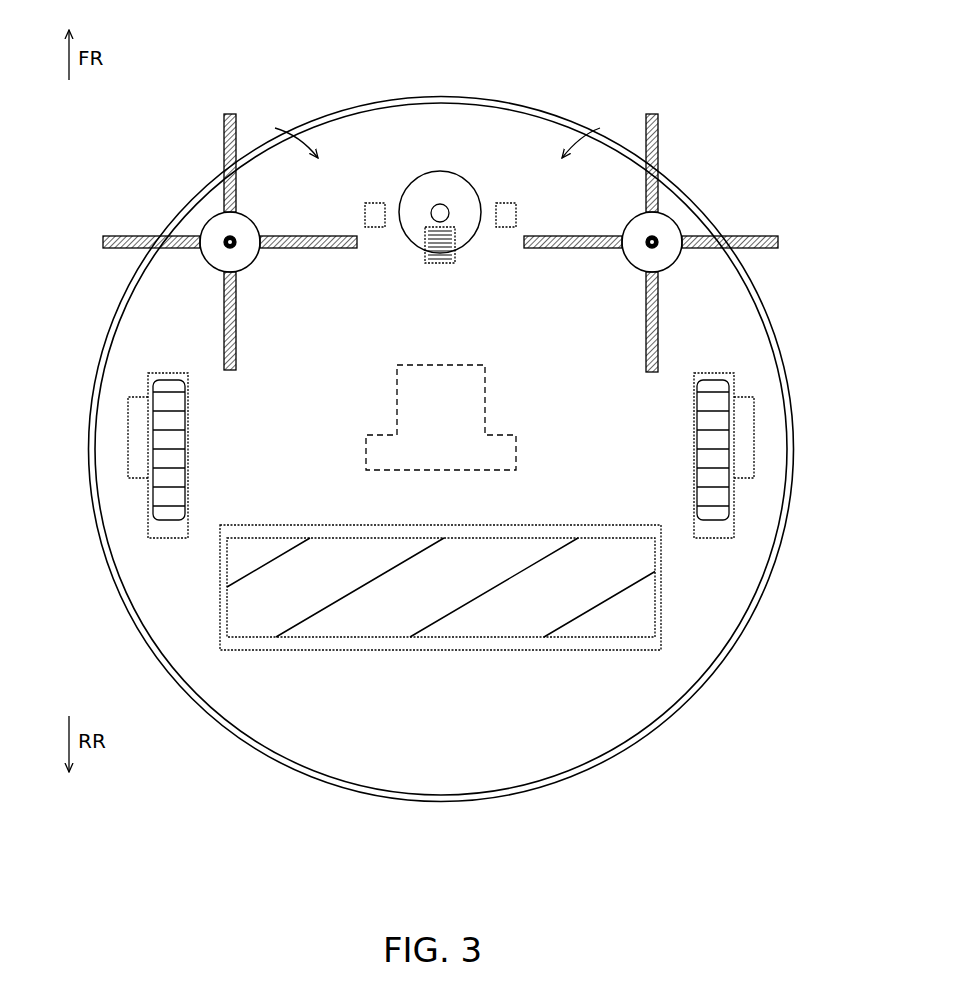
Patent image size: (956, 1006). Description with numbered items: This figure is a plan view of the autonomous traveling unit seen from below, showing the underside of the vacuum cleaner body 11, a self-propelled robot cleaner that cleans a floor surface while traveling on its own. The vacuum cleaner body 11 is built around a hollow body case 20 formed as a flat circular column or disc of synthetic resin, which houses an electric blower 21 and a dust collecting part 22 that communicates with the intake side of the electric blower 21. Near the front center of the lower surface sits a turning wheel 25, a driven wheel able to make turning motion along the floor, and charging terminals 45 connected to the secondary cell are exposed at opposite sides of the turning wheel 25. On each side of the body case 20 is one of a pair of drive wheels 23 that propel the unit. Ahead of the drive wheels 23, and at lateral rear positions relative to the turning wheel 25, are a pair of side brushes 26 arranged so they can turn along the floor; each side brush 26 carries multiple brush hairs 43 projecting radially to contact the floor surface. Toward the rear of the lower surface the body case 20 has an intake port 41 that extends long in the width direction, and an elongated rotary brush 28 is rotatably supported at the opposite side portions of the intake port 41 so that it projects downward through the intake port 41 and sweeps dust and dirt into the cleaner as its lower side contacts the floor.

The vacuum cleaner body 11 is at (451, 407).
The body case 20 is at (765, 307).
The electric blower 21 is at (485, 398).
The dust collecting part 22 is at (605, 742).
The drive wheels 23 is at (162, 420).
The turning wheel 25 is at (438, 264).
The side brushes 26 is at (438, 240).
The rotary brush 28 is at (555, 563).
The intake port 41 is at (440, 567).
The brush hairs 43 is at (223, 123).
The charging terminals 45 is at (374, 202).